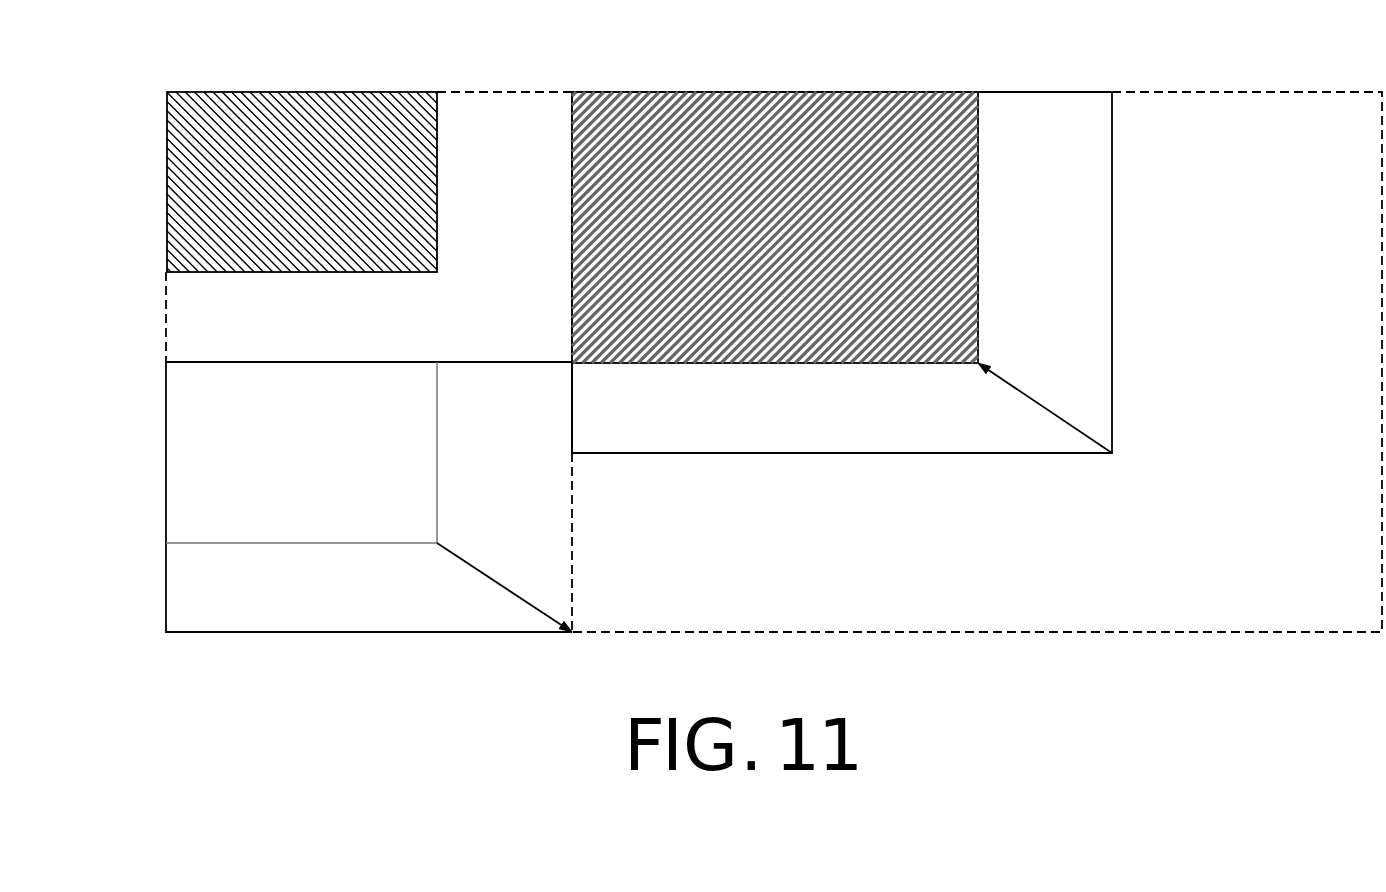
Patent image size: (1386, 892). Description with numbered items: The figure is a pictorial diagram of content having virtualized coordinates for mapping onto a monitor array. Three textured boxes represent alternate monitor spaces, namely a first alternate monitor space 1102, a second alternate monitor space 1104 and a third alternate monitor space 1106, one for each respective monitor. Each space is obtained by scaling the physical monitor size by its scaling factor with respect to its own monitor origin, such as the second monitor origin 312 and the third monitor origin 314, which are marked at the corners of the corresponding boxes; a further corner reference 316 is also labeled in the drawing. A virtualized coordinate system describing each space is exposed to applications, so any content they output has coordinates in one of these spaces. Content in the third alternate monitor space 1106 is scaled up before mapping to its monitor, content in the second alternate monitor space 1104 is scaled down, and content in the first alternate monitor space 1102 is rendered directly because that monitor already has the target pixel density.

The second monitor origin 312 is at (167, 92).
The third monitor origin 314 is at (166, 362).
The third display region 316 is at (572, 92).
The first alternate monitor space 1102 is at (275, 142).
The second alternate monitor space 1104 is at (311, 614).
The third alternate monitor space 1106 is at (785, 142).